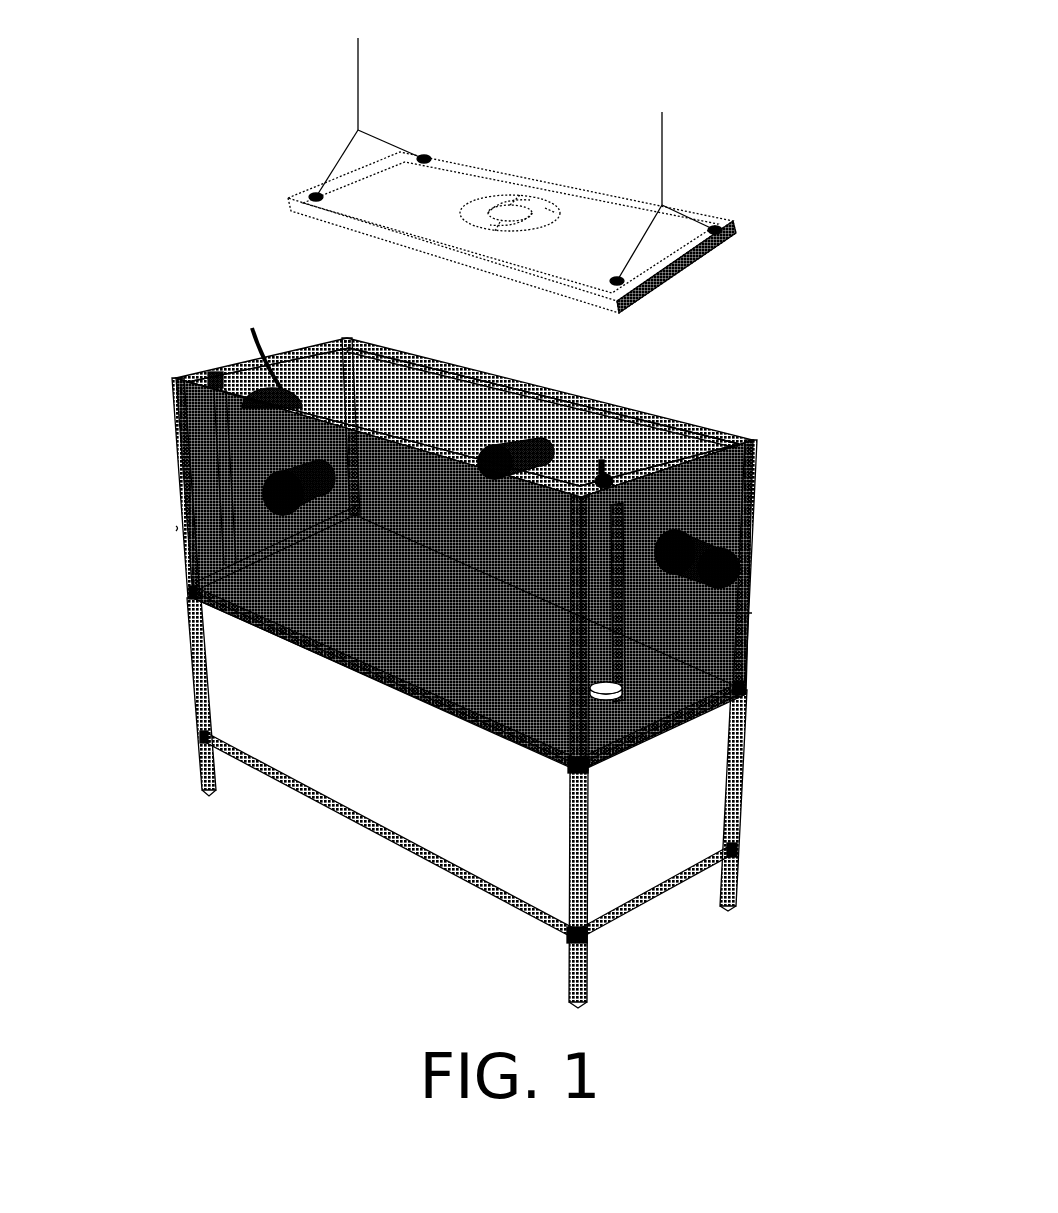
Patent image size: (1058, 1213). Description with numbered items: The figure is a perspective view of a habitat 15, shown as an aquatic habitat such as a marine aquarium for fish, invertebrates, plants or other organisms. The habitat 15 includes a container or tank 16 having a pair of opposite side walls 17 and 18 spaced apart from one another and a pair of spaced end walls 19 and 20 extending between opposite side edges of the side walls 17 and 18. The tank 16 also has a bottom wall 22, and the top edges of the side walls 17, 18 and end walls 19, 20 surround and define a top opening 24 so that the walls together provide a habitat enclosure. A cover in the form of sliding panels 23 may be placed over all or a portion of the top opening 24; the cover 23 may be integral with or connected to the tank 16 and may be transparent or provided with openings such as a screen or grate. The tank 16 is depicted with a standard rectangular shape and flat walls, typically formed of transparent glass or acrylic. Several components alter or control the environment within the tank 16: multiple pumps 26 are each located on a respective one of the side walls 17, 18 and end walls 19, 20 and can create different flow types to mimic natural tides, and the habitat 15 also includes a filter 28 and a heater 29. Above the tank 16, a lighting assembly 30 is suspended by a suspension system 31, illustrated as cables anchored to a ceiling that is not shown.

The habitat 15 is at (845, 97).
The tank 16 is at (158, 523).
The side wall 17 is at (368, 588).
The side wall 18 is at (394, 388).
The end wall 19 is at (717, 510).
The end wall 20 is at (192, 445).
The bottom wall 22 is at (662, 698).
The sliding panels 23 is at (478, 400).
The top opening 24 is at (545, 386).
The pumps 26 is at (825, 530).
The filter 28 is at (620, 672).
The heater 29 is at (210, 376).
The lighting assembly 30 is at (700, 256).
The suspension system 31 is at (358, 100).